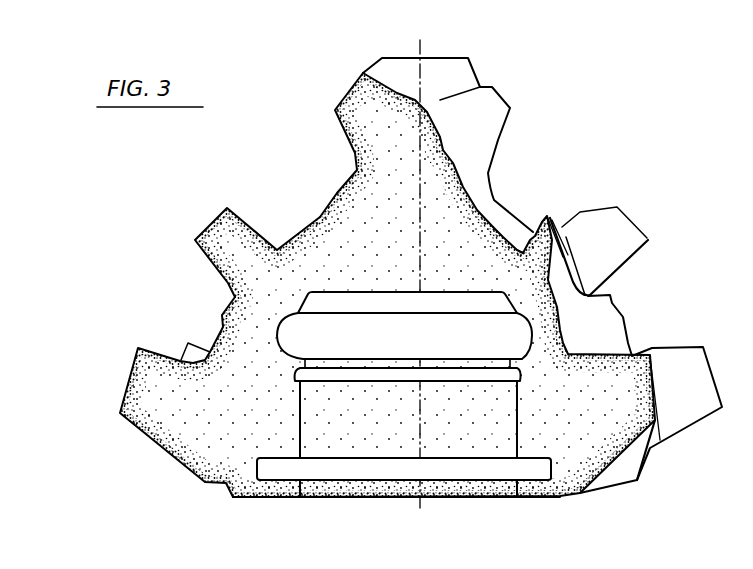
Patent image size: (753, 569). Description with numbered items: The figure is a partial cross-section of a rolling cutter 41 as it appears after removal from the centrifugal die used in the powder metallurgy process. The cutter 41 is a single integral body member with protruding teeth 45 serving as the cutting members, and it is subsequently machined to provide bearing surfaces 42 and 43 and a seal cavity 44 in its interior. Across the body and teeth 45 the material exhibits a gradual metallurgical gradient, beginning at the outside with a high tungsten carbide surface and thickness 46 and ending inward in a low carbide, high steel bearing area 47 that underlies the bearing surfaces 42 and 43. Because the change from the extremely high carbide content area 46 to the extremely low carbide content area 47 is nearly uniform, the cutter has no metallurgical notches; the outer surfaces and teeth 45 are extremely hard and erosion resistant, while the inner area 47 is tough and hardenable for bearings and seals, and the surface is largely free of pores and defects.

The cutter 41 is at (490, 206).
The bearing surface 42 is at (522, 338).
The bearing surface 43 is at (502, 424).
The seal cavity 44 is at (277, 490).
The protruding teeth 45 is at (243, 223).
The high tungsten carbide surface and thickness 46 is at (346, 100).
The low carbide, high steel bearing area 47 is at (388, 273).